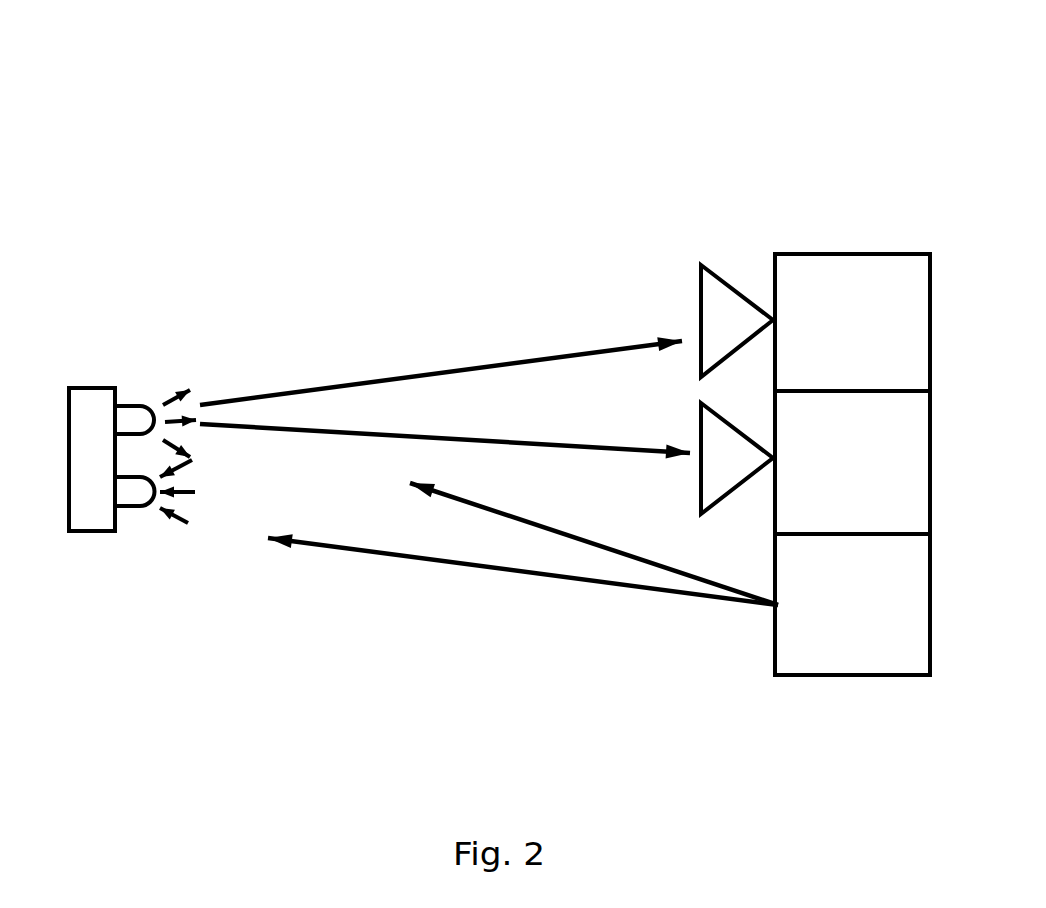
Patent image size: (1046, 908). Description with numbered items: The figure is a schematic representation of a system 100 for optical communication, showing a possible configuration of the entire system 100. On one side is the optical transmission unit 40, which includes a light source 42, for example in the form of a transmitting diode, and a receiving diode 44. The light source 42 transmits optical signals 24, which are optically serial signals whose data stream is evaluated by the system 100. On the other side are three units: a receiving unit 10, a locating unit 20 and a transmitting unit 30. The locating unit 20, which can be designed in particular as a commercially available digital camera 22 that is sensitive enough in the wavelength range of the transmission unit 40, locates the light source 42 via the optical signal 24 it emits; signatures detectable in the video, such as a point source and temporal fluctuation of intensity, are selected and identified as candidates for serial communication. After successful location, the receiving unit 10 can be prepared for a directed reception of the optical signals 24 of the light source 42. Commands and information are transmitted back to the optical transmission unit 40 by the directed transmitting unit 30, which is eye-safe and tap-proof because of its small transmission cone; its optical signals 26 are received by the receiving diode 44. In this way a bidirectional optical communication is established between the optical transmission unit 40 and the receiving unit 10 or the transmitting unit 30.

The system for optical communication 100 is at (577, 126).
The optical transmission unit 40 is at (85, 384).
The light source 42 is at (132, 402).
The receiving diode 44 is at (132, 510).
The receiving unit 10 is at (862, 345).
The locating unit 20 is at (852, 462).
The camera 22 is at (889, 476).
The transmitting unit 30 is at (865, 613).
The optical signals 24 is at (358, 380).
The optical signals 26 is at (432, 563).